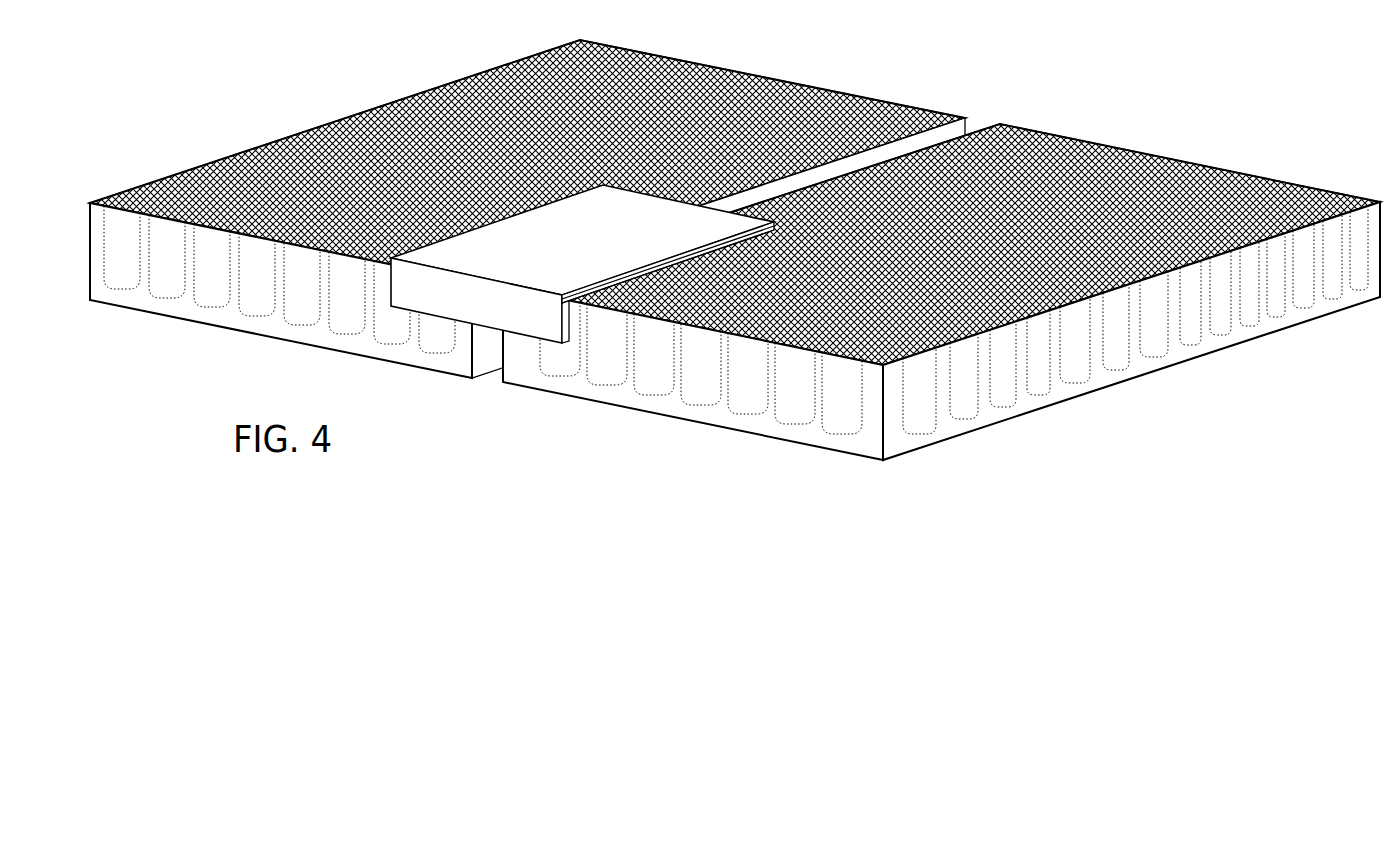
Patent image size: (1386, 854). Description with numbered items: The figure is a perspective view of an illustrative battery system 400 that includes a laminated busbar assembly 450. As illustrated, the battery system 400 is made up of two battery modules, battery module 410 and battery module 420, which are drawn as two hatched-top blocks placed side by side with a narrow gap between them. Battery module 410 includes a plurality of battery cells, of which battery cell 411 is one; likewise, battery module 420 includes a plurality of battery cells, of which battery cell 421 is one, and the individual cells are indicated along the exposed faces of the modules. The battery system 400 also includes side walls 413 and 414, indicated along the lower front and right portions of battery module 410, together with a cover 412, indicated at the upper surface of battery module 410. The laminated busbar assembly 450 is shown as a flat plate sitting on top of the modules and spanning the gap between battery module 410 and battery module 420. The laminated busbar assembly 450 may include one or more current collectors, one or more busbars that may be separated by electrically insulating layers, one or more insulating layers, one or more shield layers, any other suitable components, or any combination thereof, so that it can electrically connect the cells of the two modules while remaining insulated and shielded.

The battery system 400 is at (735, 272).
The battery module 410 is at (941, 301).
The battery cell 411 is at (927, 418).
The cover 412 is at (1318, 181).
The side wall 413 is at (603, 403).
The side wall 414 is at (1131, 353).
The battery module 420 is at (527, 232).
The battery cell 421 is at (432, 330).
The laminated busbar assembly 450 is at (554, 262).